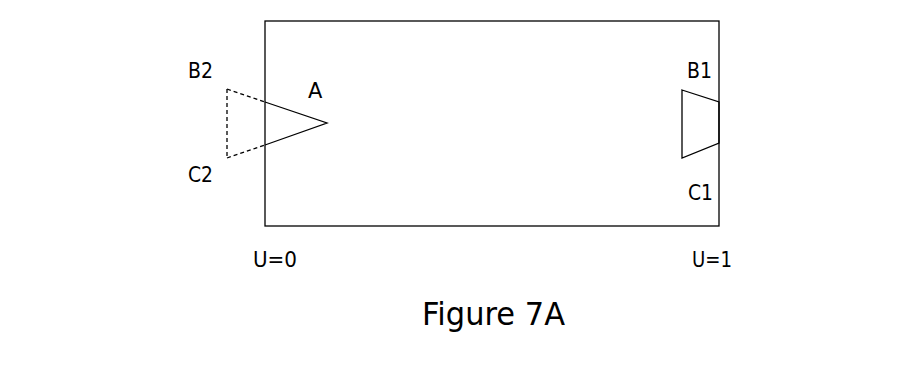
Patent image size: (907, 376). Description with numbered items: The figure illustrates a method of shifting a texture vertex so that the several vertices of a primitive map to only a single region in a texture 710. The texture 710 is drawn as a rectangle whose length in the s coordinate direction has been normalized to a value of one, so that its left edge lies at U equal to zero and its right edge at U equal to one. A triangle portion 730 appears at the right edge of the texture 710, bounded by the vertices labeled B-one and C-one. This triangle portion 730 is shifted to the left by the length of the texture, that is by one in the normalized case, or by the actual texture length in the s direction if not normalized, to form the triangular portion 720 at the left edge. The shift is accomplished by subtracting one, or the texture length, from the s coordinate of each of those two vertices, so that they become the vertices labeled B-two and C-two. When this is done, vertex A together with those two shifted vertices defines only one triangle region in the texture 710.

The texture 710 is at (335, 48).
The triangular portion 720 is at (236, 123).
The triangle portion 730 is at (710, 123).